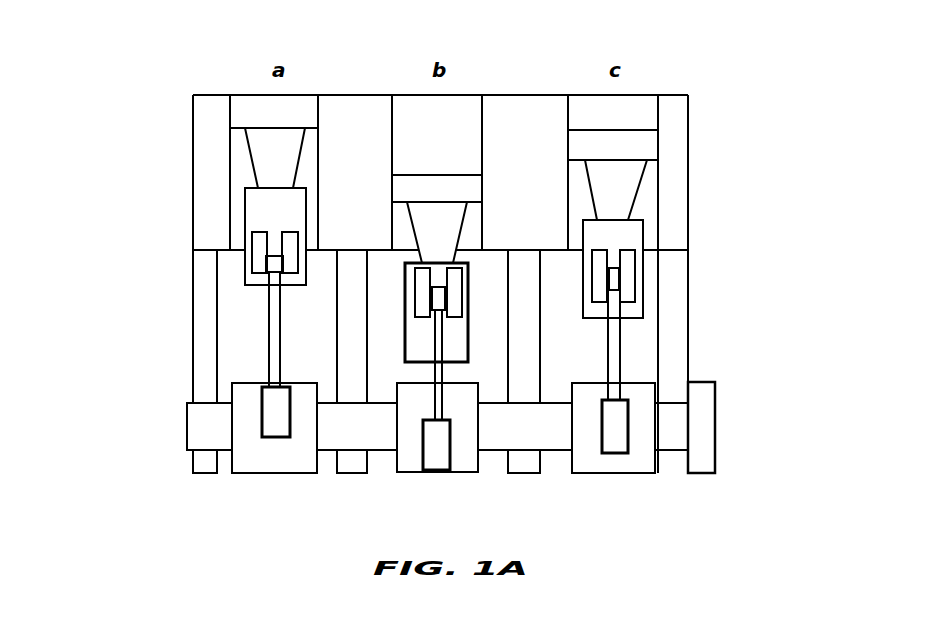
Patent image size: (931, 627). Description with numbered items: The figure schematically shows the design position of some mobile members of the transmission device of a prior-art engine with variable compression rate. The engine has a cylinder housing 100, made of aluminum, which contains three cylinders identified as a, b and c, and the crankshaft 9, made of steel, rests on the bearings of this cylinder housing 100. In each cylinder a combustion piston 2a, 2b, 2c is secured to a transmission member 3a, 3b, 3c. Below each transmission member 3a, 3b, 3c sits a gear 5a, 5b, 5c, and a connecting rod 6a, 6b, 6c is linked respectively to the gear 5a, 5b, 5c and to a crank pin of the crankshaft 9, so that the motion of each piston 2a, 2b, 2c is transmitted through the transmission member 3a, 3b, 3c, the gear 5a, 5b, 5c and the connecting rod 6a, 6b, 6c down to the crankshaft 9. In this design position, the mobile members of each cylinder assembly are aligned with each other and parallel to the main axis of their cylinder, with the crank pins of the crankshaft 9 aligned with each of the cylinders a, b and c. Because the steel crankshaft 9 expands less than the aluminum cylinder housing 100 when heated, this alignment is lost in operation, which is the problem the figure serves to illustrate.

The cylinder housing 100 is at (675, 323).
The combustion piston 2a is at (250, 113).
The combustion piston 2b is at (432, 192).
The combustion piston 2c is at (627, 145).
The transmission member 3a is at (268, 212).
The transmission member 3b is at (450, 225).
The transmission member 3c is at (618, 233).
The gear 5a is at (258, 268).
The gear 5b is at (423, 307).
The gear 5c is at (628, 278).
The connecting rod 6a is at (277, 373).
The connecting rod 6b is at (438, 407).
The connecting rod 6c is at (612, 382).
The crankshaft 9 is at (705, 440).